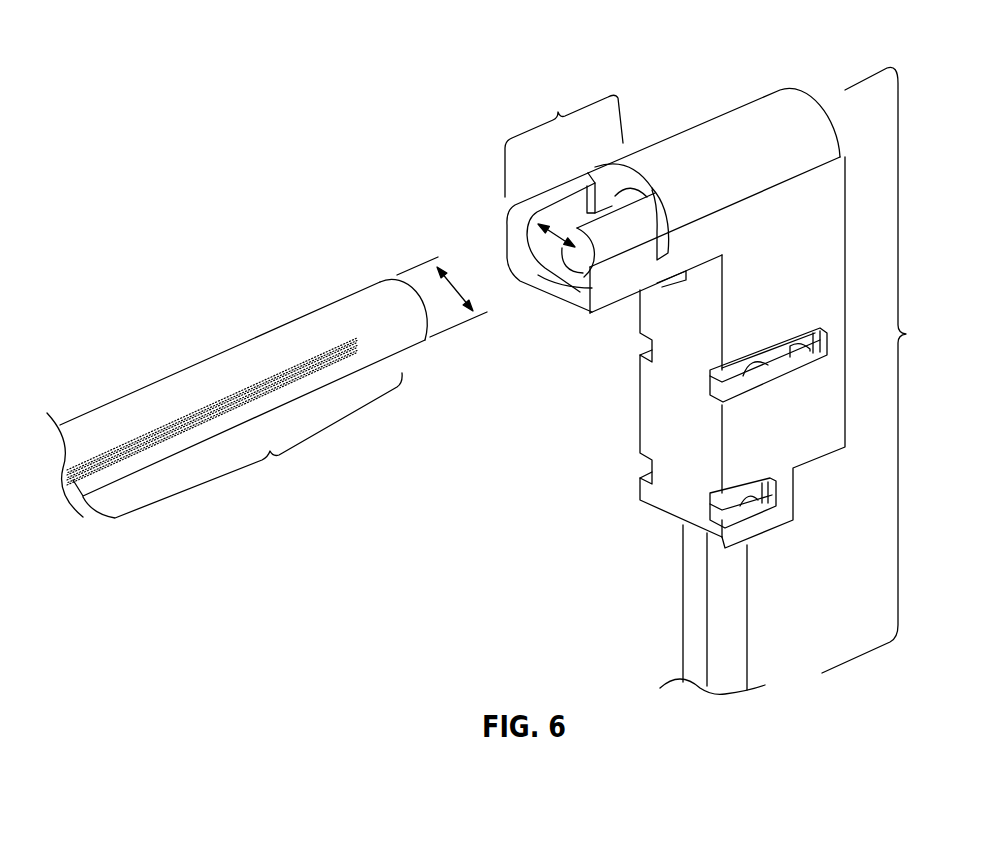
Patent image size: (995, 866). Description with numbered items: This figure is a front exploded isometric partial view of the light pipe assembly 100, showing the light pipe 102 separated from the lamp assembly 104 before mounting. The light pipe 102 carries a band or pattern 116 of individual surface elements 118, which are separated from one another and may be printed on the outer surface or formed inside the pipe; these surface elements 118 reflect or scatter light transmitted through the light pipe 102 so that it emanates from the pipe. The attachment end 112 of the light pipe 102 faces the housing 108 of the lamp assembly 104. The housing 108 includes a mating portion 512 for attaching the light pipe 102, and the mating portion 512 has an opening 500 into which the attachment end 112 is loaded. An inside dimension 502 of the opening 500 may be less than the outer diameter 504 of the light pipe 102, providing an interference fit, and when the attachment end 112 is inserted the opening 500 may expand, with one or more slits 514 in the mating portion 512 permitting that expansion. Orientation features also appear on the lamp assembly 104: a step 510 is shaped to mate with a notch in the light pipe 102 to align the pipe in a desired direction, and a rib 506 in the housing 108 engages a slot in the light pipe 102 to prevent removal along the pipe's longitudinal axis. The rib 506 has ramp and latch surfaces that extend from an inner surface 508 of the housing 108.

The light pipe assembly 100 is at (420, 57).
The light pipe 102 is at (287, 341).
The lamp assembly 104 is at (799, 380).
The housing 108 is at (751, 112).
The attachment end 112 is at (381, 303).
The band or pattern 116 is at (242, 445).
The surface elements 118 is at (173, 418).
The opening 500 is at (552, 244).
The inside dimension 502 is at (577, 226).
The outer diameter 504 is at (478, 288).
The rib 506 is at (583, 265).
The inner surface 508 is at (562, 255).
The step 510 is at (656, 195).
The mating portion 512 is at (564, 139).
The slits 514 is at (662, 240).